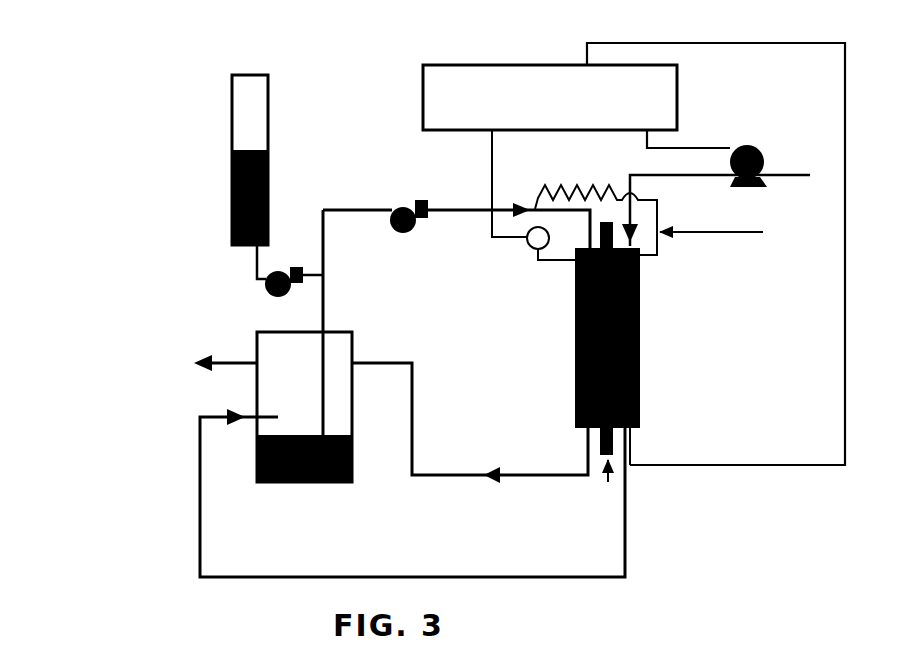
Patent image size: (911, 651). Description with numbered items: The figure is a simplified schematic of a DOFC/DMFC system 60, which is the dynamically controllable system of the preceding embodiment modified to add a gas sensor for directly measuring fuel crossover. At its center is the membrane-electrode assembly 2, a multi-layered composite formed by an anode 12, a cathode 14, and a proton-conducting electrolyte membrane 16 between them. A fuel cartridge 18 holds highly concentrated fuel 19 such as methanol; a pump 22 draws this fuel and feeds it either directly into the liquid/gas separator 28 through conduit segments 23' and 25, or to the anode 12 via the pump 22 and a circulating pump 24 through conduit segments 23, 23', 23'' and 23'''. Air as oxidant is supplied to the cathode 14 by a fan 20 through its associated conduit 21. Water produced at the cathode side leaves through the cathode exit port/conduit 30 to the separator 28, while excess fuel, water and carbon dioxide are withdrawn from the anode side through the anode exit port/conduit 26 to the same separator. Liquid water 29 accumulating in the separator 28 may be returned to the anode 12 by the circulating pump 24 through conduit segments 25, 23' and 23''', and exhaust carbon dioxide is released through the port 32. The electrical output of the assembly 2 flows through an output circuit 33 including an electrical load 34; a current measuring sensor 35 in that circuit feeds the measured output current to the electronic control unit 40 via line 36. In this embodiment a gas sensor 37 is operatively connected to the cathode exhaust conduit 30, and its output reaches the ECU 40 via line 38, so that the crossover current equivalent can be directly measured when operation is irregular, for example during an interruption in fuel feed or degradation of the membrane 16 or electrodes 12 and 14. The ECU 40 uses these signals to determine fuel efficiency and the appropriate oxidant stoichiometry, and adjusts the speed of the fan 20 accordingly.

The membrane-electrode assembly 2 is at (661, 285).
The anode 12 is at (573, 393).
The cathode 14 is at (644, 354).
The proton-conducting electrolyte membrane 16 is at (603, 468).
The fuel cartridge 18 is at (277, 95).
The highly concentrated fuel 19 is at (227, 195).
The fan 20 is at (764, 149).
The conduit 21 is at (672, 182).
The pump 22 is at (258, 296).
The conduit segment 23 is at (214, 246).
The conduit segment 23' is at (305, 241).
The conduit segment 23'' is at (360, 187).
The conduit segment 23''' is at (500, 196).
The circulating pump 24 is at (420, 230).
The conduit segment 25 is at (333, 307).
The anode exit port/conduit 26 is at (546, 484).
The liquid/gas separator 28 is at (359, 341).
The liquid water 29 is at (275, 483).
The cathode exit port/conduit 30 is at (629, 538).
The port 32 is at (226, 374).
The output circuit 33 is at (729, 235).
The electrical load 34 is at (587, 181).
The current measuring device/sensor 35 is at (525, 250).
The line 36 is at (497, 174).
The gas sensor 37 is at (649, 436).
The line 38 is at (838, 340).
The electronic control unit 40 is at (680, 94).
The DOFC/DMFC system 60 is at (116, 249).